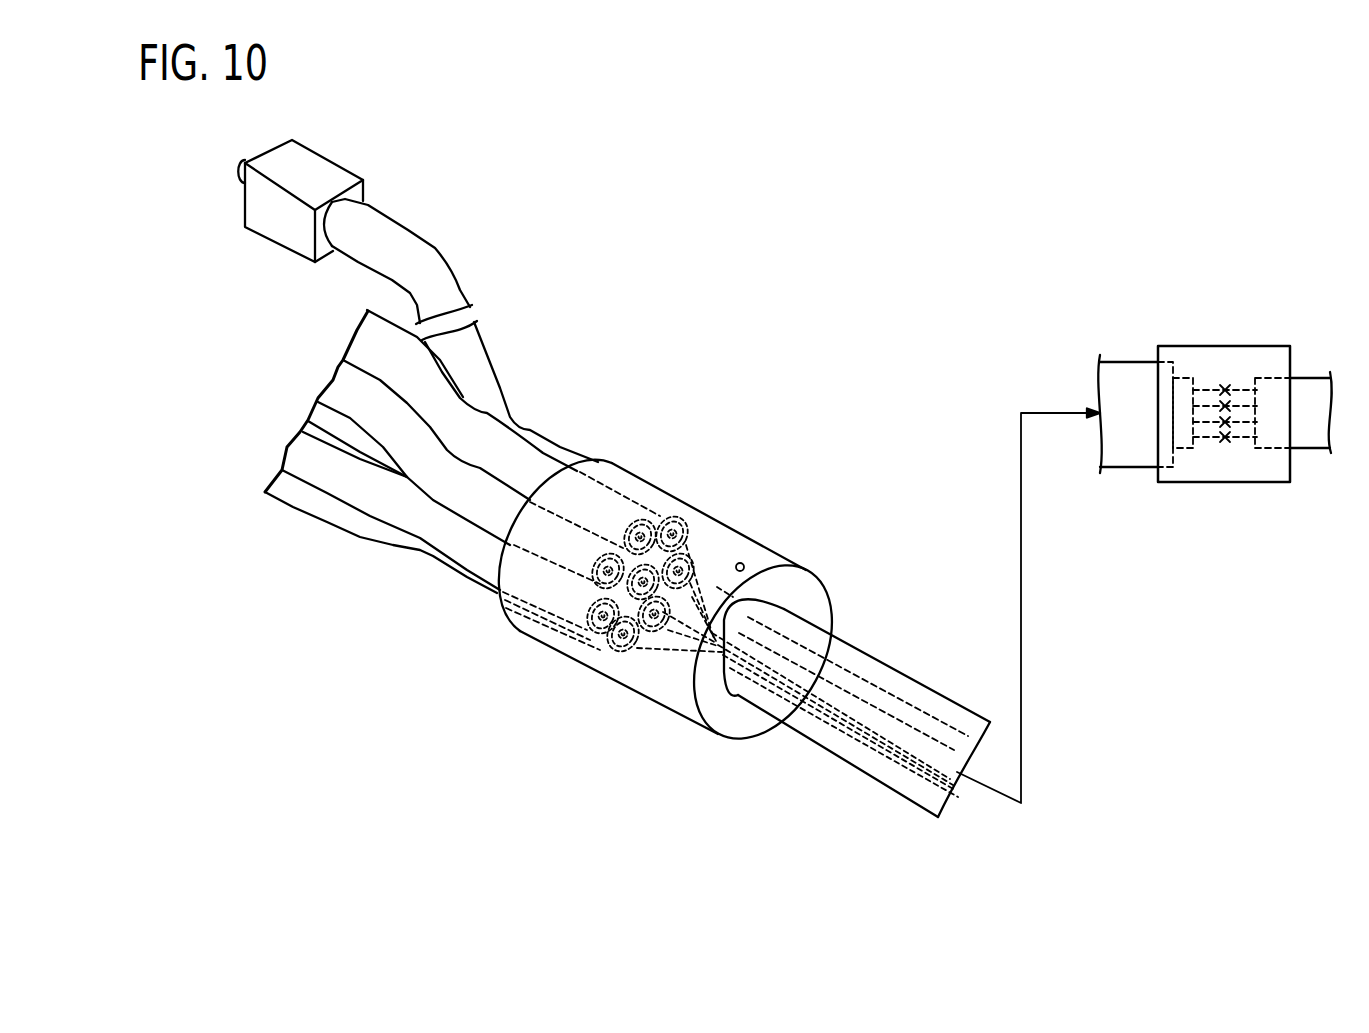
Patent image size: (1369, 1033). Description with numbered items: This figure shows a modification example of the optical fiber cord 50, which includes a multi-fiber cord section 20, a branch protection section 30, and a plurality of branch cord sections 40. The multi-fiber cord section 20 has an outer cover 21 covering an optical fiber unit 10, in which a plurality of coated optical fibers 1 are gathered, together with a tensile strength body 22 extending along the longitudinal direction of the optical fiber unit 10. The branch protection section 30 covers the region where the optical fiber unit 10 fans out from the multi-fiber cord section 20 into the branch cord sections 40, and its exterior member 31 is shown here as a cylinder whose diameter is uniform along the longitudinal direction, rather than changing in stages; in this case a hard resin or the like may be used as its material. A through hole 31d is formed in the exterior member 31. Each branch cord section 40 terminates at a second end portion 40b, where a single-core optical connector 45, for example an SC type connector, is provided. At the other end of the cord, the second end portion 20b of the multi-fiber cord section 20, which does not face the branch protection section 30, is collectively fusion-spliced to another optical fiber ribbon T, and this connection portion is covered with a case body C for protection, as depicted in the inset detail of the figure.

The coated optical fiber 1 is at (912, 773).
The optical fiber unit 10 is at (840, 745).
The multi-fiber cord section 20 is at (793, 690).
The second end portion 20b is at (1130, 452).
The outer cover 21 is at (912, 677).
The tensile strength body 22 is at (940, 710).
The branch protection section 30 is at (679, 559).
The exterior member 31 is at (708, 540).
The through hole 31d is at (776, 525).
The branch cord section 40 is at (478, 365).
The second end portion 40b is at (355, 222).
The single-core optical connector 45 is at (275, 218).
The optical fiber cord 50 is at (878, 403).
The case body C is at (1265, 347).
The optical fiber ribbon T is at (1315, 377).